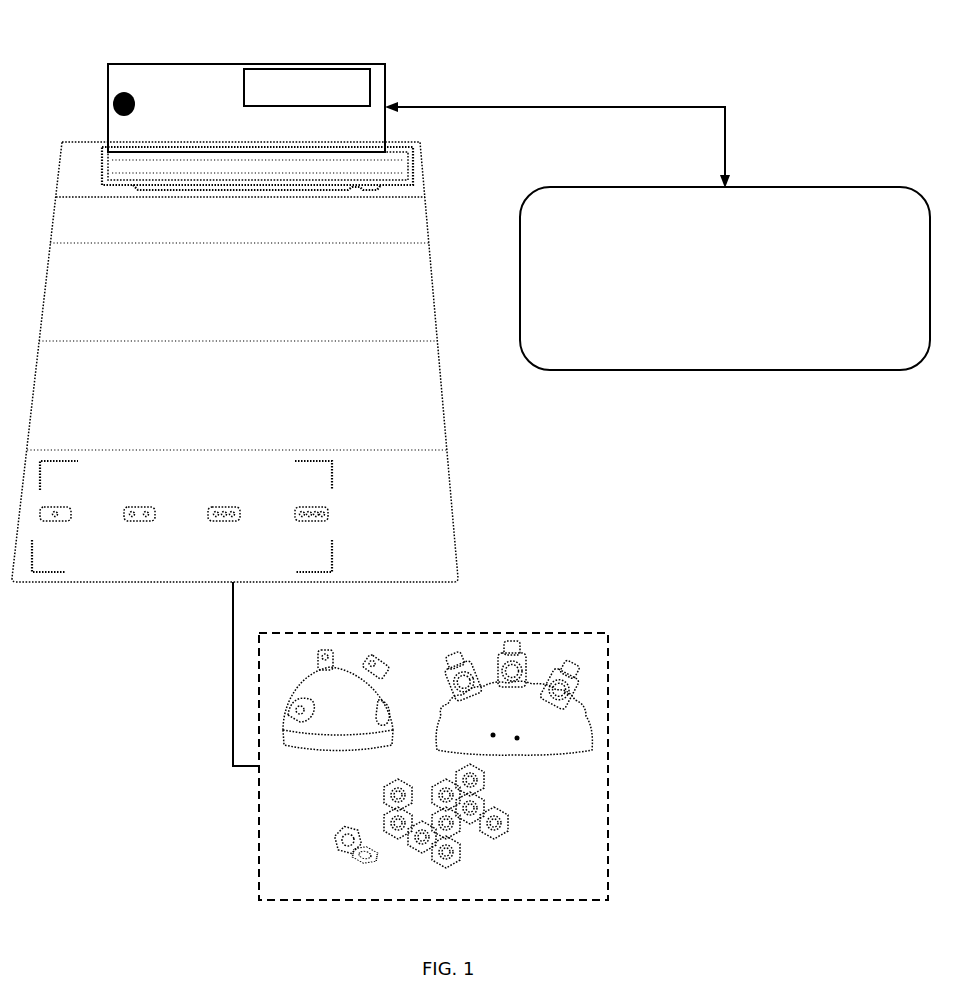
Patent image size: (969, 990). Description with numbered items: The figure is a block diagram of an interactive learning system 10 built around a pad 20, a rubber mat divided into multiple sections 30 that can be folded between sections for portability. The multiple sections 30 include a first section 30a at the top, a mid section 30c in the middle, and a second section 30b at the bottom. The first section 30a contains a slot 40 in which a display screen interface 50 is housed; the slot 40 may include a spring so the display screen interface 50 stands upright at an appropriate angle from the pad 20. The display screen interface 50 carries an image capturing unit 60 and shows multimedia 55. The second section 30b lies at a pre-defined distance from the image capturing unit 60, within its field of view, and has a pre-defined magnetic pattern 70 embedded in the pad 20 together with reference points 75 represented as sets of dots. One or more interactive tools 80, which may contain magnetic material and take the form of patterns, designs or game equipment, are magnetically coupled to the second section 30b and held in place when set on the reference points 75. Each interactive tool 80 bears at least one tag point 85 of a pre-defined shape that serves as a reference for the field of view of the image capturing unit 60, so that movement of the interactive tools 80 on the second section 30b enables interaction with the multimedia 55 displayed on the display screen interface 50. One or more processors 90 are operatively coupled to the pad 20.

The interactive learning system 10 is at (742, 86).
The pad 20 is at (62, 140).
The multiple sections 30 is at (413, 278).
The first section 30a is at (412, 222).
The second section 30b is at (436, 531).
The mid section 30c is at (427, 407).
The slot 40 is at (385, 152).
The display screen interface 50 is at (216, 66).
The multimedia 55 is at (280, 68).
The image capturing unit 60 is at (124, 92).
The pre-defined magnetic pattern 70 is at (53, 558).
The reference points 75 is at (142, 508).
The interactive tools 80 is at (487, 633).
The tag point 85 is at (305, 735).
The processors 90 is at (613, 187).